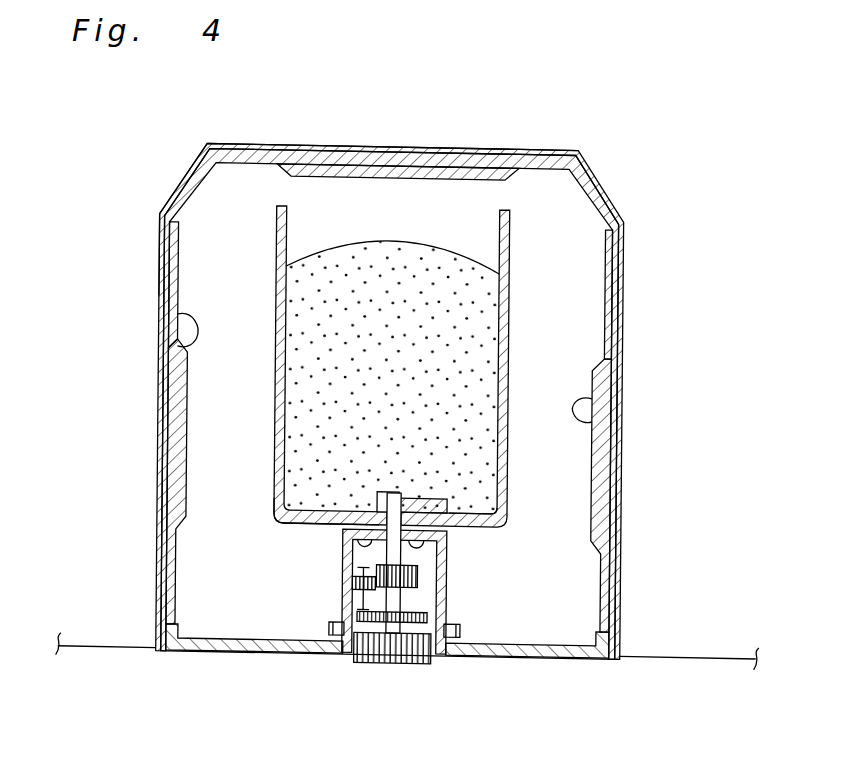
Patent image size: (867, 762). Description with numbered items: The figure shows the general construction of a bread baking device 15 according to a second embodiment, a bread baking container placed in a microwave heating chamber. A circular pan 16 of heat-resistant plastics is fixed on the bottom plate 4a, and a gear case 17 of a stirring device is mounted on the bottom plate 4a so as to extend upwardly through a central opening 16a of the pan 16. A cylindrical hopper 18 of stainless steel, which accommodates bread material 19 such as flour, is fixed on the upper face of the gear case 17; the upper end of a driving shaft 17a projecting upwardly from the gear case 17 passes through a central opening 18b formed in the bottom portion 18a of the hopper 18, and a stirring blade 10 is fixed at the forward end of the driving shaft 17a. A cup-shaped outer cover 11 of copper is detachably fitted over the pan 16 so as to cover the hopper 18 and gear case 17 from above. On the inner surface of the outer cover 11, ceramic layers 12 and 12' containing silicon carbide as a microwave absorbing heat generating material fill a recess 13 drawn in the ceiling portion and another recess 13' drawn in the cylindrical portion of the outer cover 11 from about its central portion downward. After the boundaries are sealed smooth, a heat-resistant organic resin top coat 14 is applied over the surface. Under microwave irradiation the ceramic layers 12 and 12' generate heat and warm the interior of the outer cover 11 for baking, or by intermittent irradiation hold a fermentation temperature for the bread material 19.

The bottom plate 4a is at (712, 660).
The stirring blade 10 is at (402, 493).
The outer cover 11 is at (612, 194).
The ceramic layer 12 is at (398, 114).
The ceramic layer 12' is at (394, 485).
The recess 13 is at (422, 371).
The recess 13' is at (394, 351).
The top coat 14 is at (160, 199).
The bread baking device 15 is at (475, 138).
The circular pan 16 is at (622, 620).
The central opening 16a is at (343, 652).
The gear case 17 is at (447, 583).
The driving shaft 17a is at (400, 493).
The cylindrical hopper 18 is at (518, 355).
The bottom portion 18a is at (295, 529).
The central opening 18b is at (375, 505).
The bread material 19 is at (468, 310).